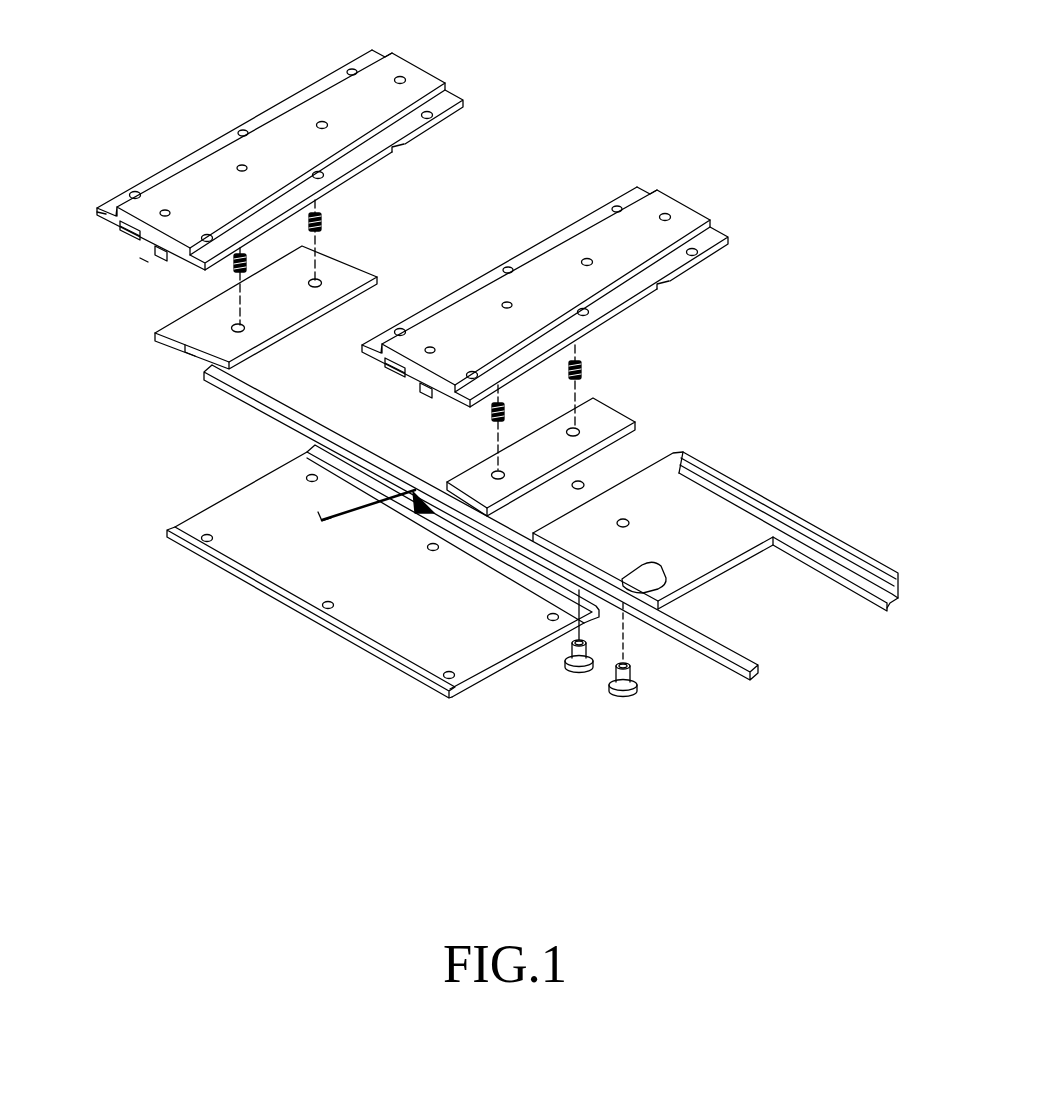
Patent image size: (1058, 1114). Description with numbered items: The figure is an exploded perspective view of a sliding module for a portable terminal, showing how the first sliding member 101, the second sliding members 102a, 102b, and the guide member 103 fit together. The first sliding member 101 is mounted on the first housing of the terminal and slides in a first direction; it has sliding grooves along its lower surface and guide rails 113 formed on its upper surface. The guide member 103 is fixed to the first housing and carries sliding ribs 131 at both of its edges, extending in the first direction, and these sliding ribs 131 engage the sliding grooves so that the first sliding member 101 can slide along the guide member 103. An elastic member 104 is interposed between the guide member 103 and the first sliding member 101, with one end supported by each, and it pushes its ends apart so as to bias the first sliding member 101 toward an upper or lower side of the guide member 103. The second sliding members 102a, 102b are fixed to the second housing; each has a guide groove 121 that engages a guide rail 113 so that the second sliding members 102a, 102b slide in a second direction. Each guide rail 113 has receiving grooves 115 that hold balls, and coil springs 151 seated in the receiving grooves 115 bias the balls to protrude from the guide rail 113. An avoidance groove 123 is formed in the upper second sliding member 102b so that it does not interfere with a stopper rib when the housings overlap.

The first sliding member 101 is at (751, 483).
The second sliding member 102a is at (733, 209).
The second sliding member 102b is at (286, 81).
The guide member 103 is at (323, 639).
The elastic member 104 is at (425, 515).
The guide rail 113 is at (200, 341).
The receiving groove 115 is at (318, 280).
The guide groove 121 is at (142, 260).
The avoidance groove 123 is at (107, 226).
The sliding rib 131 is at (253, 596).
The coil spring 151 is at (323, 222).